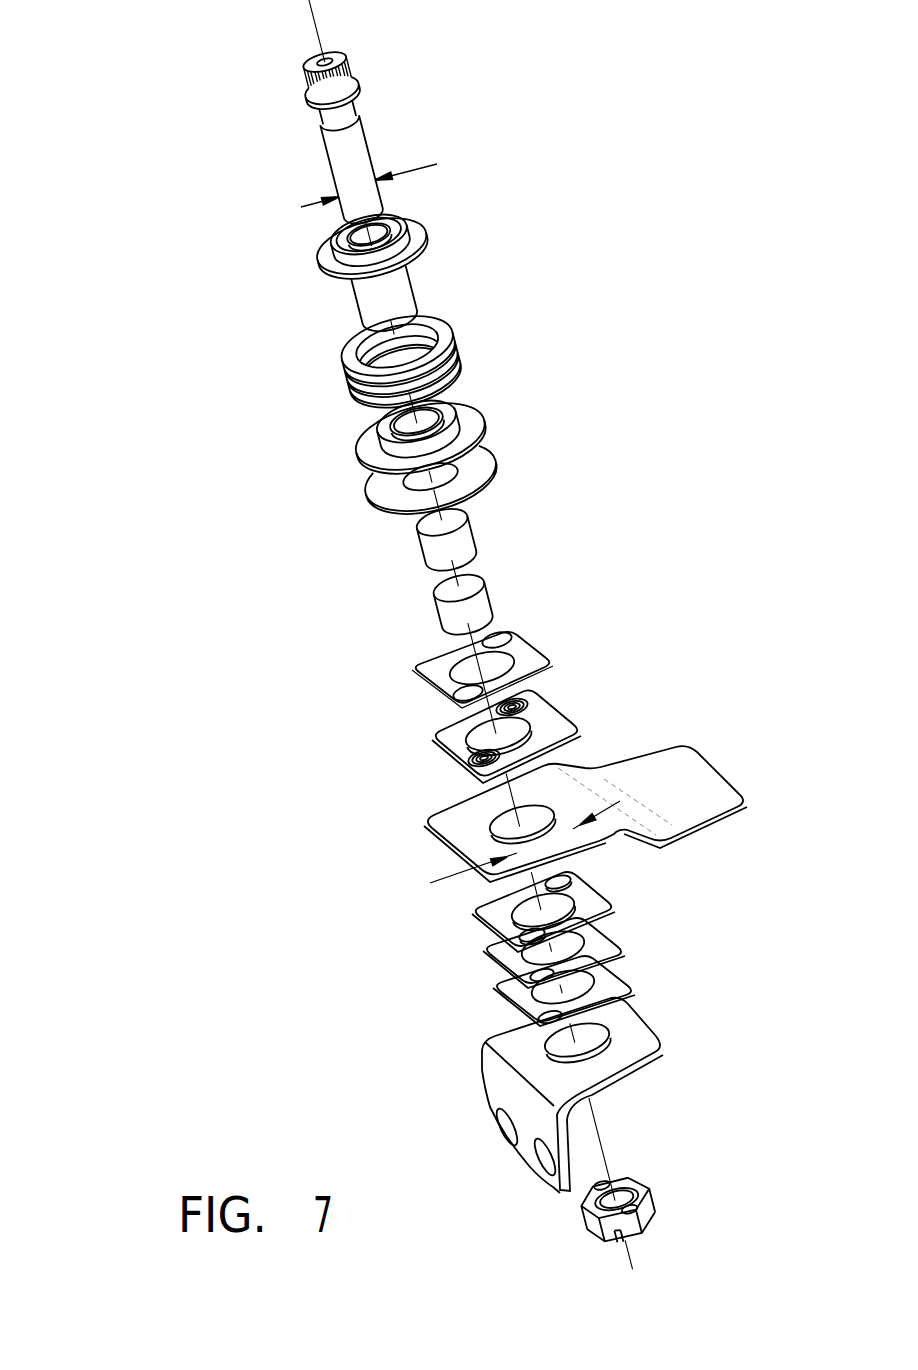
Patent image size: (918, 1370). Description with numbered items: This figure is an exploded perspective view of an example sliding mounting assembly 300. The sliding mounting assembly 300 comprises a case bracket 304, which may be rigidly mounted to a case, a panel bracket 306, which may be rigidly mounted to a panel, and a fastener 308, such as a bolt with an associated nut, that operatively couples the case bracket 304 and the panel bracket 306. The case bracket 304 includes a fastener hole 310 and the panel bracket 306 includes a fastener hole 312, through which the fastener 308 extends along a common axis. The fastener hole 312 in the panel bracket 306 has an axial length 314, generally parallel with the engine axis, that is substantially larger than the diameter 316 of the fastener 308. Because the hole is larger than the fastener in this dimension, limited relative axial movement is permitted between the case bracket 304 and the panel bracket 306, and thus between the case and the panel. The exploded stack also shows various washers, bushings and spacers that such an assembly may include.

The sliding mounting assembly 300 is at (198, 101).
The case bracket 304 is at (537, 1095).
The panel bracket 306 is at (657, 760).
The fastener 308 is at (350, 155).
The fastener hole 310 is at (595, 1052).
The fastener hole 312 is at (496, 818).
The axial length 314 is at (462, 877).
The diameter 316 is at (412, 170).